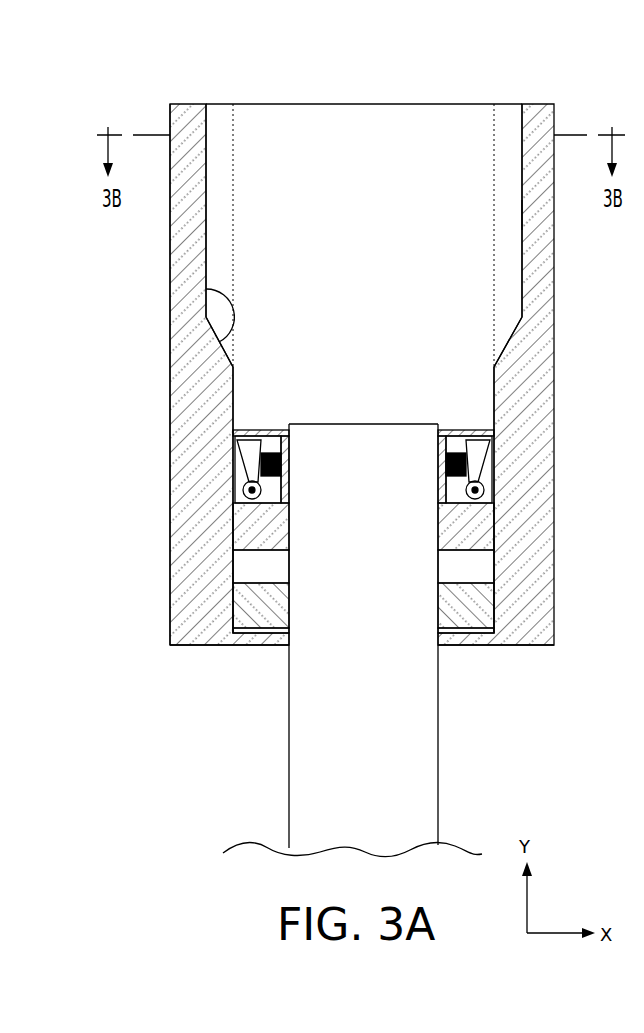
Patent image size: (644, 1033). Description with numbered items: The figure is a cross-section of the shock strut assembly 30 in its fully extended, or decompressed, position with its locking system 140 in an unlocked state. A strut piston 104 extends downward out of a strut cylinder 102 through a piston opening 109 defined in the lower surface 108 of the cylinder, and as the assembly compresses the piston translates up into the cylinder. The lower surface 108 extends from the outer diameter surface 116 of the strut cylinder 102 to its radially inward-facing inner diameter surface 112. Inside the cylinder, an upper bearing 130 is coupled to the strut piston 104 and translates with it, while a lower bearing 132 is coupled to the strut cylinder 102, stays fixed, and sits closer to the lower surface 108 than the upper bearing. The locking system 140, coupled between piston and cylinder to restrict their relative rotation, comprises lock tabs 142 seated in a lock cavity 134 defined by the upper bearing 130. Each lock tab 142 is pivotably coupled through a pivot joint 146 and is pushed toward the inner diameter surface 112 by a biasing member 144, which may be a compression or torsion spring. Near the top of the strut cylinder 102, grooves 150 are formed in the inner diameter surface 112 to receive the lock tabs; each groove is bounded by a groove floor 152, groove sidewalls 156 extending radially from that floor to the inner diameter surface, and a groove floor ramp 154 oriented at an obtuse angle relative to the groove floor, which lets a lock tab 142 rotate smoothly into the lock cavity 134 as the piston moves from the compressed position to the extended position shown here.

The shock strut assembly 30 is at (146, 92).
The strut cylinder 102 is at (183, 305).
The strut piston 104 is at (313, 765).
The lower surface 108 is at (535, 647).
The piston opening 109 is at (278, 653).
The inner diameter surface 112 is at (235, 370).
The outer diameter surface 116 is at (172, 418).
The upper bearing 130 is at (483, 530).
The lower bearing 132 is at (463, 634).
The lock cavity 134 is at (277, 426).
The locking system 140 is at (510, 445).
The lock tab 142 is at (253, 437).
The biasing member 144 is at (282, 457).
The pivot joint 146 is at (283, 491).
The groove 150 is at (220, 100).
The groove floor 152 is at (207, 172).
The groove floor ramp 154 is at (513, 330).
The groove sidewall 156 is at (508, 213).